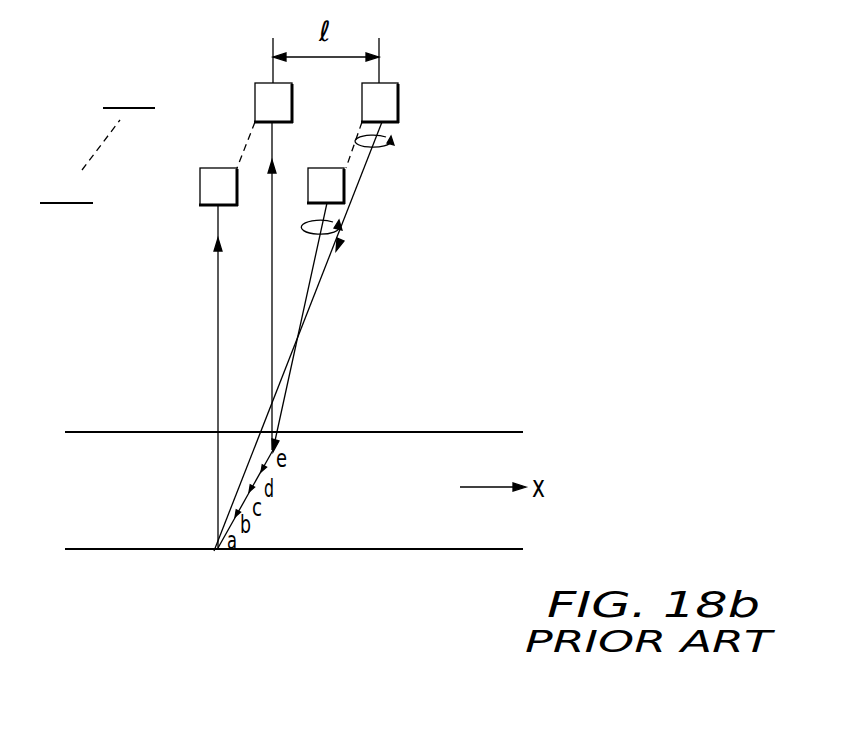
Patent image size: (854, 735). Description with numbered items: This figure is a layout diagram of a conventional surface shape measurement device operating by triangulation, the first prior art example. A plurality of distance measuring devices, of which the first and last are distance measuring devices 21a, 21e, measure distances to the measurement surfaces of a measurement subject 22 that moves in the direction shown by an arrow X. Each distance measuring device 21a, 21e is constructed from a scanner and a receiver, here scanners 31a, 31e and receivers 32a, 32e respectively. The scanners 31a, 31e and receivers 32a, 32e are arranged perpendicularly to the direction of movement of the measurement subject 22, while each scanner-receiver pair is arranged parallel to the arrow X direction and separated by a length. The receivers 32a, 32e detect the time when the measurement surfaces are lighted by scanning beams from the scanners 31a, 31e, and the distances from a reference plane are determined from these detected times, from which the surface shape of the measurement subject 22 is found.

The distance measuring device 21a is at (80, 161).
The distance measuring device 21e is at (129, 91).
The measurement subject 22 is at (478, 440).
The scanner 31a is at (344, 185).
The scanner 31e is at (398, 102).
The receiver 32a is at (200, 185).
The receiver 32e is at (255, 98).